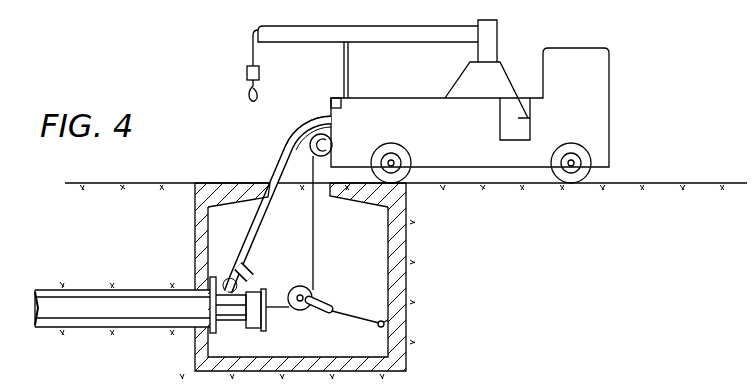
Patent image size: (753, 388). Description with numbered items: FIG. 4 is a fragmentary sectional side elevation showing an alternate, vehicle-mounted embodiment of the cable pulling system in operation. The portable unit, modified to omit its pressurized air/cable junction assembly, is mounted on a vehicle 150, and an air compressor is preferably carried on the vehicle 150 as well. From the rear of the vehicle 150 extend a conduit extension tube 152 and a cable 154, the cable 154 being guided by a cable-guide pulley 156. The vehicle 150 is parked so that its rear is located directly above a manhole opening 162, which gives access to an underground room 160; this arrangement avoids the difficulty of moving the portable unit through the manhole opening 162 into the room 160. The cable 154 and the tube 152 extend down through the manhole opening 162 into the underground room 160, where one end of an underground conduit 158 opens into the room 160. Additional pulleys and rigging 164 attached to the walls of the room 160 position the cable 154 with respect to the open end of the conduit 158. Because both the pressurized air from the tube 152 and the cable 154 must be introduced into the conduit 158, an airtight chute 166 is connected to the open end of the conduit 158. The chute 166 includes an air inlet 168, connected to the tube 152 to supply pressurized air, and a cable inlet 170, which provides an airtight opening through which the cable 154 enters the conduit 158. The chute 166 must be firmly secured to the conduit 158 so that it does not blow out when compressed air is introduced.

The vehicle 150 is at (603, 95).
The conduit extension tube 152 is at (292, 145).
The cable 154 is at (314, 242).
The cable-guide pulley 156 is at (322, 122).
The underground conduit 158 is at (84, 300).
The underground room 160 is at (405, 267).
The manhole opening 162 is at (272, 182).
The pulleys and rigging 164 is at (318, 301).
The airtight chute 166 is at (201, 347).
The air inlet 168 is at (230, 270).
The cable inlet 170 is at (266, 330).